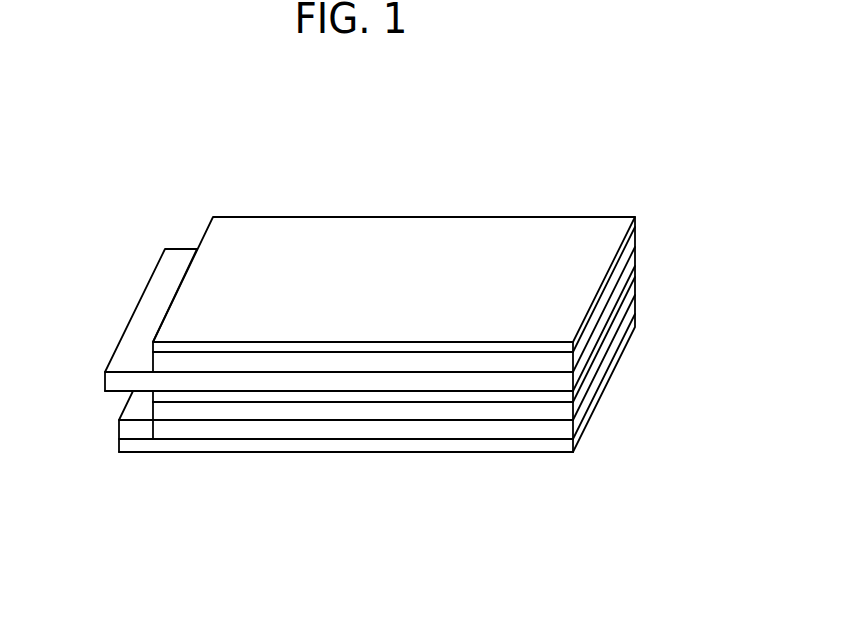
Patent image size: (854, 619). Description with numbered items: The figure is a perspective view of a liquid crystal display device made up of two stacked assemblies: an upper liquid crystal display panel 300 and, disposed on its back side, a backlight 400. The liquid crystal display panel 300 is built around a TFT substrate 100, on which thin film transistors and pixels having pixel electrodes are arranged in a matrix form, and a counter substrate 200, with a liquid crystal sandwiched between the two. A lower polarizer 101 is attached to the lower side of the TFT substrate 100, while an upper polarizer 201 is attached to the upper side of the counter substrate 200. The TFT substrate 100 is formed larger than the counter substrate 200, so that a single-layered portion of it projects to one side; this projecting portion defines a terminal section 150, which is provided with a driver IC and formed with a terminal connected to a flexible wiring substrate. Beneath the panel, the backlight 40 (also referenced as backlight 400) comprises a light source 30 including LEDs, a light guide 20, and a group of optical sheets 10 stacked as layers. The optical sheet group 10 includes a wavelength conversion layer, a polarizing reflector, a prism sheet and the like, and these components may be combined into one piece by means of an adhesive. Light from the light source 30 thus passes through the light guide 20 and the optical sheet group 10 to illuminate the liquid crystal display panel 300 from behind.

The optical sheet group 10 is at (215, 413).
The light guide 20 is at (282, 430).
The light source 30 is at (137, 428).
The backlight 40 is at (343, 445).
The TFT substrate 100 is at (365, 383).
The lower polarizer 101 is at (307, 397).
The terminal section 150 is at (134, 340).
The counter substrate 200 is at (445, 365).
The upper polarizer 201 is at (503, 238).
The liquid crystal display panel 300 is at (285, 168).
The backlight 400 is at (132, 505).